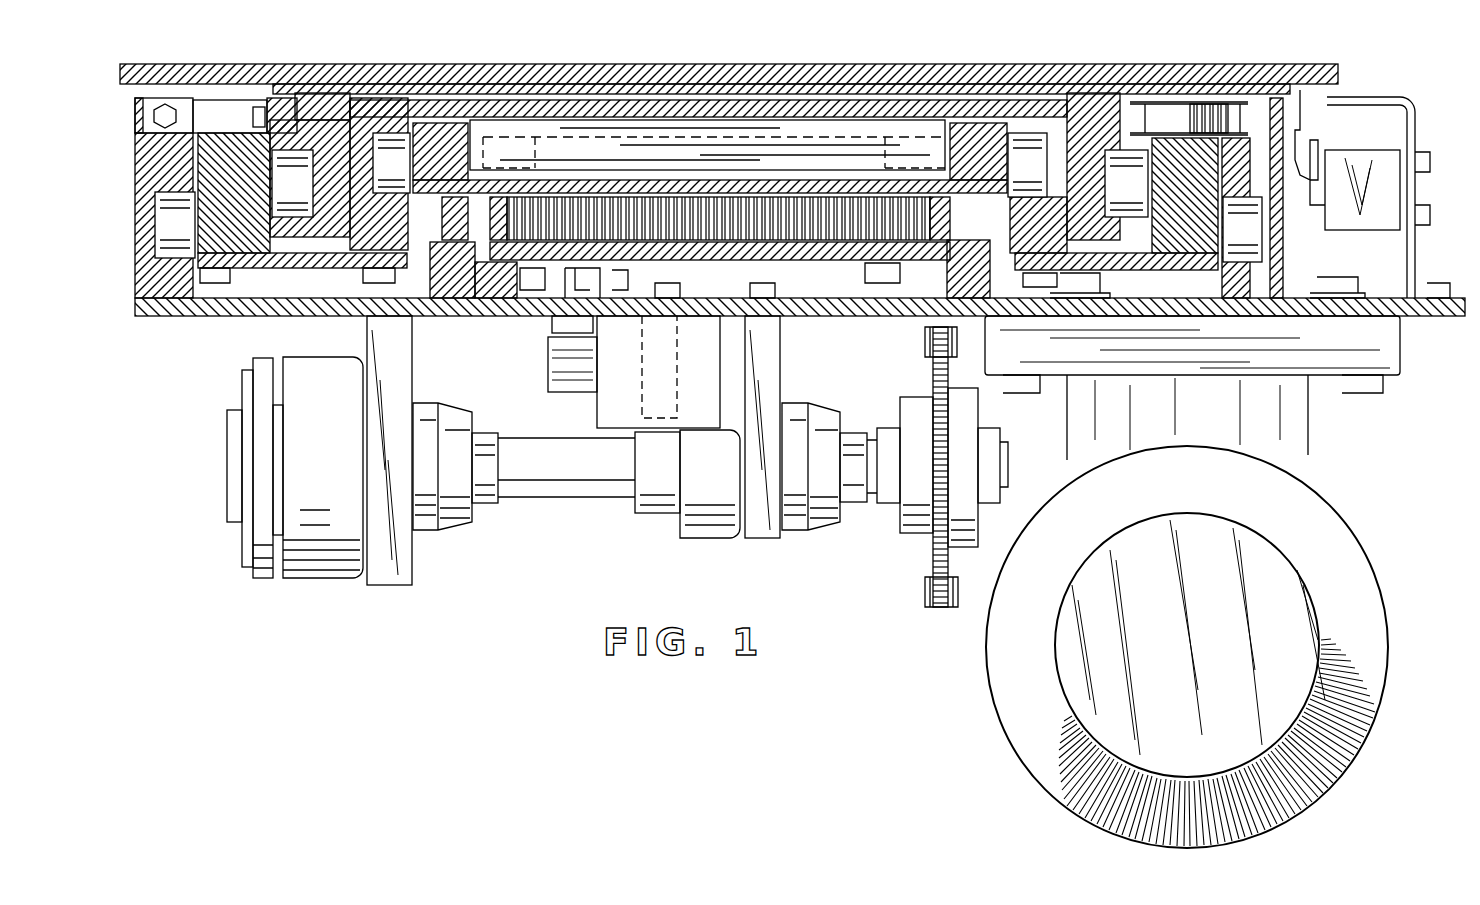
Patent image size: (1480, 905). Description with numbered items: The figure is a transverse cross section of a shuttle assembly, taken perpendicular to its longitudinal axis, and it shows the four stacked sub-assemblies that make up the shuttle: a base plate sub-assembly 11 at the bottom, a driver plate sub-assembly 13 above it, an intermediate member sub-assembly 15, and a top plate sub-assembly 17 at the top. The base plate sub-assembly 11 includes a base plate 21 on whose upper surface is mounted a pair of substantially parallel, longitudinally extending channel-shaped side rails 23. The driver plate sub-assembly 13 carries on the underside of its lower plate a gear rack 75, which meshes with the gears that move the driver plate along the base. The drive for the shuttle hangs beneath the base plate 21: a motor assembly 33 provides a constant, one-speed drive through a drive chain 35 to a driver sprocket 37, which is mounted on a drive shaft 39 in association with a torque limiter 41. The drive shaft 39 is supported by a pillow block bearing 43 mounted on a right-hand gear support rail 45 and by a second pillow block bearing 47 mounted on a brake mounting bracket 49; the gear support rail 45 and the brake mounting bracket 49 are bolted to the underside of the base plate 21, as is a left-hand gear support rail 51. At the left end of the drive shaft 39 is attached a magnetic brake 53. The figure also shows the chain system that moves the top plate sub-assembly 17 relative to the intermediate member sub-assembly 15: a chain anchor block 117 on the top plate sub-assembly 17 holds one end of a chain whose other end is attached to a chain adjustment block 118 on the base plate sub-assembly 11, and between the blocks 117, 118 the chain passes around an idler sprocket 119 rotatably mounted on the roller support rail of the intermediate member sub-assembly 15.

The base plate sub-assembly 11 is at (216, 324).
The driver plate sub-assembly 13 is at (833, 274).
The intermediate member sub-assembly 15 is at (845, 100).
The top plate sub-assembly 17 is at (650, 62).
The base plate 21 is at (1430, 318).
The channel-shaped side rails 23 is at (178, 172).
The motor assembly 33 is at (1352, 510).
The drive chain 35 is at (926, 586).
The driver sprocket 37 is at (933, 553).
The drive shaft 39 is at (557, 498).
The torque limiter 41 is at (912, 405).
The pillow block bearing 43 is at (800, 530).
The right-hand gear support rail 45 is at (780, 358).
The pillow block bearing 47 is at (455, 530).
The brake mounting bracket 49 is at (400, 348).
The left-hand gear support rail 51 is at (650, 390).
The magnetic brake 53 is at (303, 598).
The gear rack 75 is at (738, 292).
The chain anchor block 117 is at (271, 98).
The chain adjustment block 118 is at (178, 98).
The idler sprocket 119 is at (1197, 105).